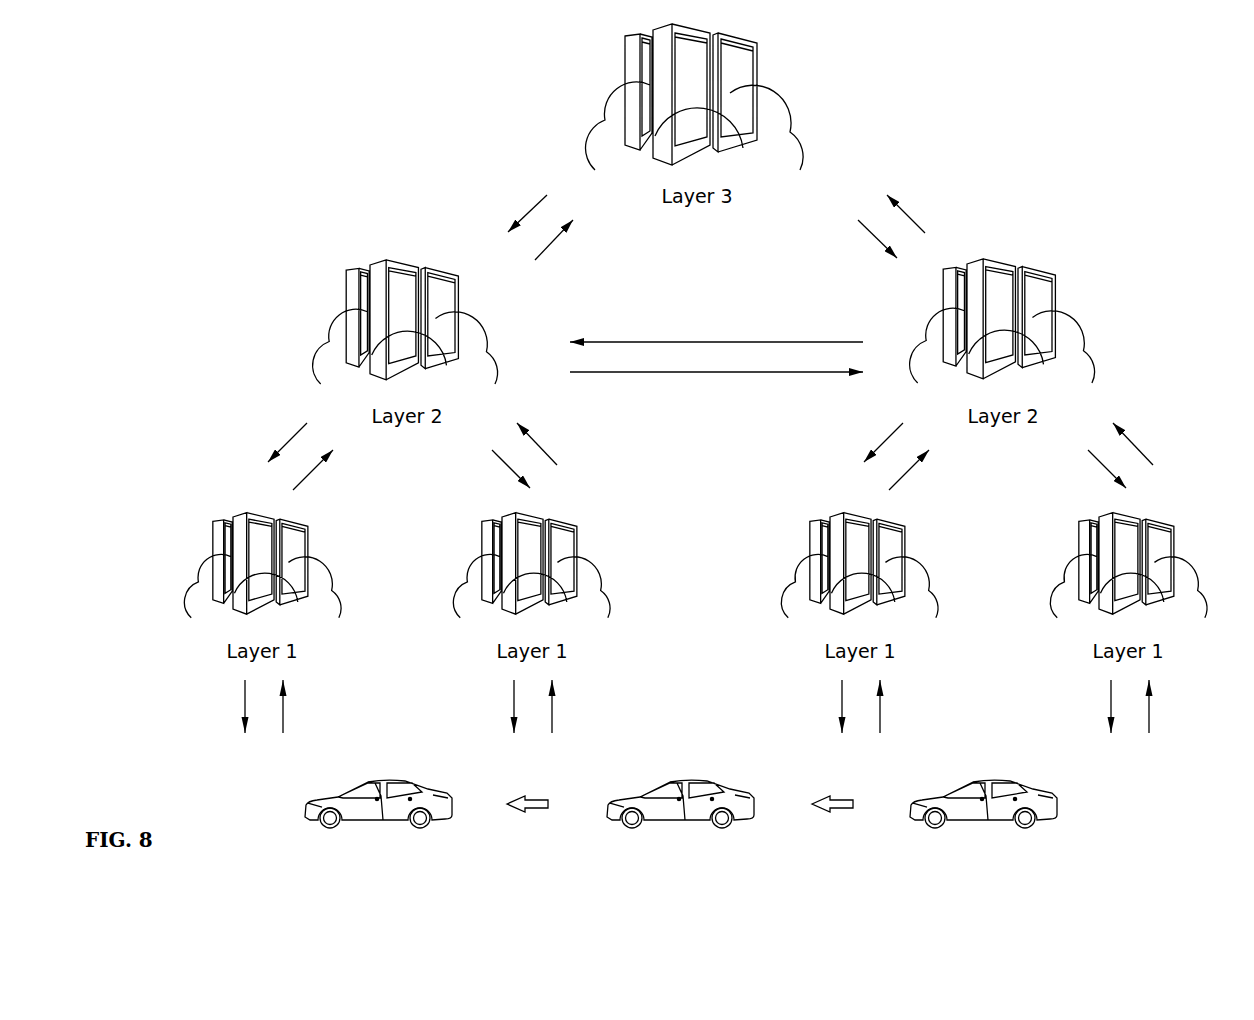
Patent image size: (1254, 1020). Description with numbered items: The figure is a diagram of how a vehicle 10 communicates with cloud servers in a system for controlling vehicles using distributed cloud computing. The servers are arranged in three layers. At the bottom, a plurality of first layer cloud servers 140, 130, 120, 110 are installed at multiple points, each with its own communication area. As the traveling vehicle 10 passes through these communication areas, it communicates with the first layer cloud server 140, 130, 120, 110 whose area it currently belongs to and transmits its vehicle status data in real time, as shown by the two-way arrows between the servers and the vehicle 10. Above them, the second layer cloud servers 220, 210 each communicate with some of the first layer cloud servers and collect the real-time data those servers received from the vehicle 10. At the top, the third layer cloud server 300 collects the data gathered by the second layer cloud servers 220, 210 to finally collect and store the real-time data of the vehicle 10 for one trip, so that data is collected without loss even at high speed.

The third layer cloud server 300 is at (743, 72).
The second layer cloud server 220 is at (448, 296).
The second layer cloud server 210 is at (1045, 295).
The first layer cloud server 140 is at (295, 548).
The first layer cloud server 130 is at (564, 548).
The first layer cloud server 120 is at (892, 548).
The first layer cloud server 110 is at (1161, 548).
The vehicle 10 is at (1058, 804).